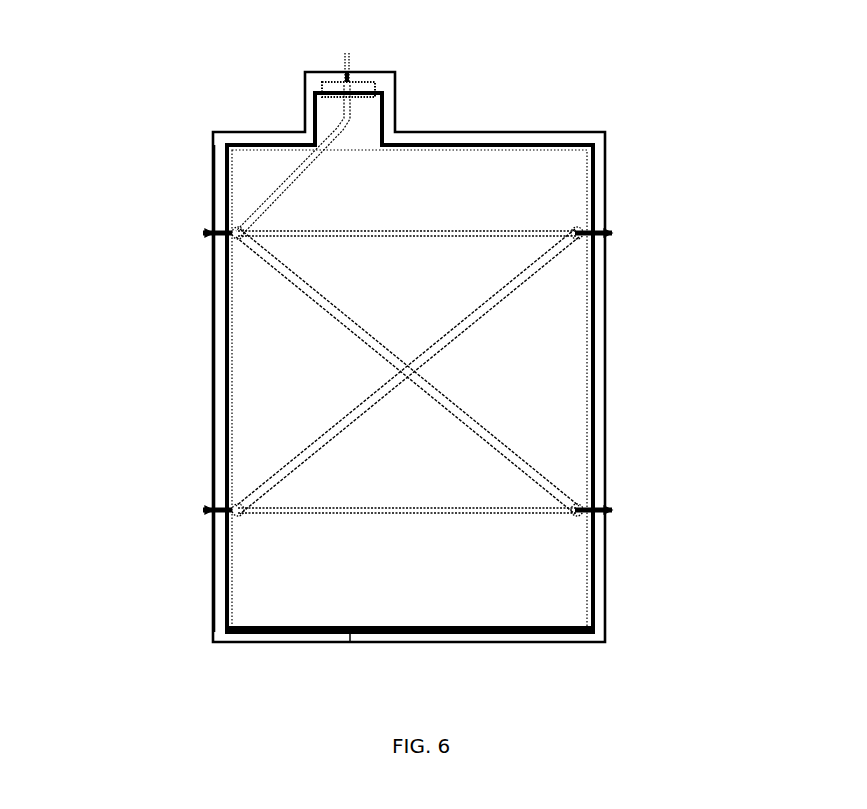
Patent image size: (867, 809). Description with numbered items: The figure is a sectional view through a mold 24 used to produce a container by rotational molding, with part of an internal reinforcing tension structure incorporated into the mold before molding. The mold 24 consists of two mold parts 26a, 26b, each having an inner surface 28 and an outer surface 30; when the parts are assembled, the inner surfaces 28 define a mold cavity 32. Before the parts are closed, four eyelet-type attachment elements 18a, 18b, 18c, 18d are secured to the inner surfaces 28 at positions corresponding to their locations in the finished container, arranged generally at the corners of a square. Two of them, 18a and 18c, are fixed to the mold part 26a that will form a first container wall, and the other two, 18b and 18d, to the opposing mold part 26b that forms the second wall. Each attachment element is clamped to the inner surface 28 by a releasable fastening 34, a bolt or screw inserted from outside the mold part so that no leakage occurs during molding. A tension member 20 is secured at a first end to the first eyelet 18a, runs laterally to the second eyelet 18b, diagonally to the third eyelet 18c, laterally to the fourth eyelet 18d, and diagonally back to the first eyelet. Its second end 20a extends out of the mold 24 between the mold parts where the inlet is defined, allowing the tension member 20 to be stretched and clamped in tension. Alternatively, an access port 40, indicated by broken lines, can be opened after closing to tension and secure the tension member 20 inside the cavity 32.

The mold 24 is at (146, 372).
The mold part 26a is at (209, 147).
The mold part 26b is at (609, 300).
The access port 40 is at (609, 352).
The mold cavity 32 is at (507, 189).
The inner surface 28 is at (233, 563).
The outer surface 30 is at (210, 563).
The second end of the tension member 20a is at (357, 62).
The releasable fastening 34 is at (206, 235).
The tension member 20 is at (557, 487).
The attachment element 18a is at (241, 247).
The attachment element 18b is at (577, 215).
The attachment element 18c is at (238, 497).
The attachment element 18d is at (575, 521).